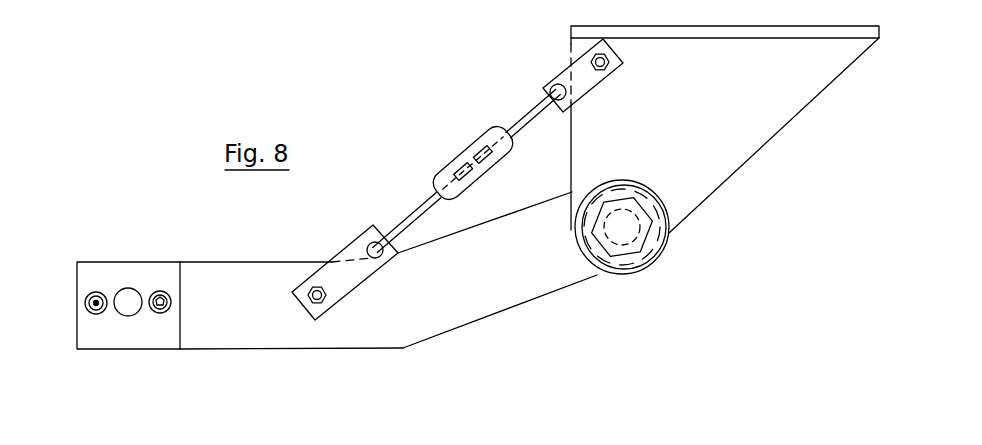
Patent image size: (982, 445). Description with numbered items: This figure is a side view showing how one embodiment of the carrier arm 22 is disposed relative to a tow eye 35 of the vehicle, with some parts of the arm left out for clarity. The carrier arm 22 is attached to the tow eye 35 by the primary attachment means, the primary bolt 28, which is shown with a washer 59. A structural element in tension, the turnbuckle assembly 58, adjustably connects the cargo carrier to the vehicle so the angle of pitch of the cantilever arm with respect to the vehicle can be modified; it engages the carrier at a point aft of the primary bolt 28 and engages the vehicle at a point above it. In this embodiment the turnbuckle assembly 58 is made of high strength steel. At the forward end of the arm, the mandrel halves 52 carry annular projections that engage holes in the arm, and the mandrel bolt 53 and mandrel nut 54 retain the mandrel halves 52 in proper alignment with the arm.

The arm 22 is at (508, 361).
The primary bolt 28 is at (640, 240).
The tow eye 35 is at (812, 89).
The mandrel halves 52 is at (144, 340).
The mandrel bolt 53 is at (159, 291).
The mandrel nut 54 is at (85, 303).
The turnbuckle assembly 58 is at (463, 139).
The washer 59 is at (665, 225).